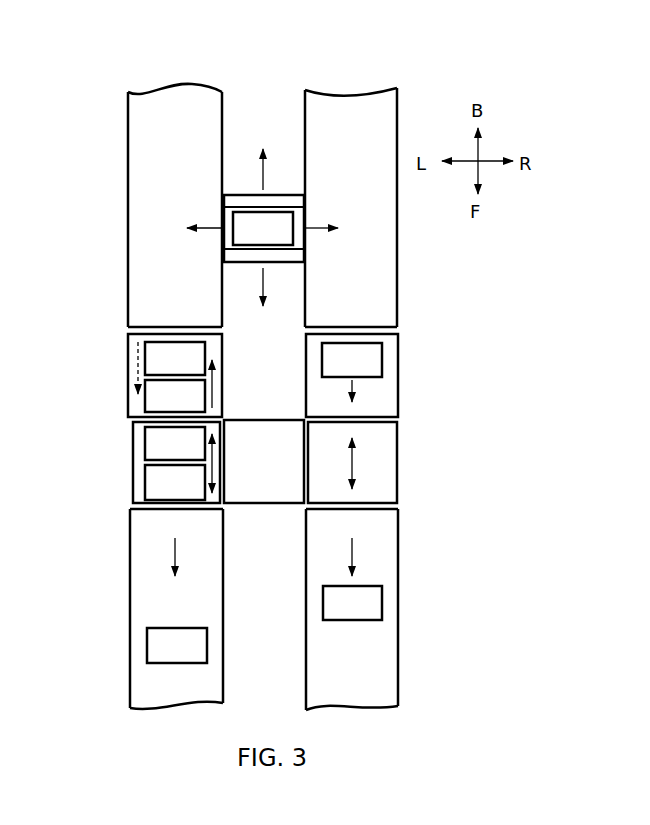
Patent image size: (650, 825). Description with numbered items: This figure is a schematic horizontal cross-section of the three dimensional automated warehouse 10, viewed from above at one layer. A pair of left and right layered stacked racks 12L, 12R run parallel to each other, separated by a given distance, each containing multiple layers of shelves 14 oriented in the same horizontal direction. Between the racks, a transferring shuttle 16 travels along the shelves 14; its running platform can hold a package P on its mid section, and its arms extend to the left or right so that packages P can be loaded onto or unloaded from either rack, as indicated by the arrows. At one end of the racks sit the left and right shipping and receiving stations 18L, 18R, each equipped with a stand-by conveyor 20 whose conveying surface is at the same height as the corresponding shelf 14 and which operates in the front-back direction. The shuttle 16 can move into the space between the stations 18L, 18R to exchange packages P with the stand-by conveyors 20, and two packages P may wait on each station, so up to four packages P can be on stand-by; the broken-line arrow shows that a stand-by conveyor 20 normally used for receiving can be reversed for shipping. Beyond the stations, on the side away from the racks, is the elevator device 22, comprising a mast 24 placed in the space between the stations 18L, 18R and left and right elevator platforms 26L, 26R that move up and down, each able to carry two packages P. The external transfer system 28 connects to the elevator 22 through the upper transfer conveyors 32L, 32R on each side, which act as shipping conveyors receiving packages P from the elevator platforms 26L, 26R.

The three dimensional automated warehouse 10 is at (379, 57).
The left layered stacked rack 12L is at (125, 149).
The right layered stacked rack 12R is at (401, 121).
The shelf 14 is at (142, 210).
The transferring shuttle 16 is at (282, 205).
The left shipping and receiving station 18L is at (123, 332).
The right shipping and receiving station 18R is at (403, 344).
The stand-by conveyor 20 is at (218, 352).
The elevator device 22 is at (283, 512).
The mast 24 is at (260, 504).
The left elevator platform 26L is at (138, 492).
The right elevator platform 26R is at (385, 466).
The external transfer system 28 is at (410, 678).
The left upper transfer conveyor 32L is at (143, 596).
The right upper transfer conveyor 32R is at (392, 557).
The package P is at (279, 240).